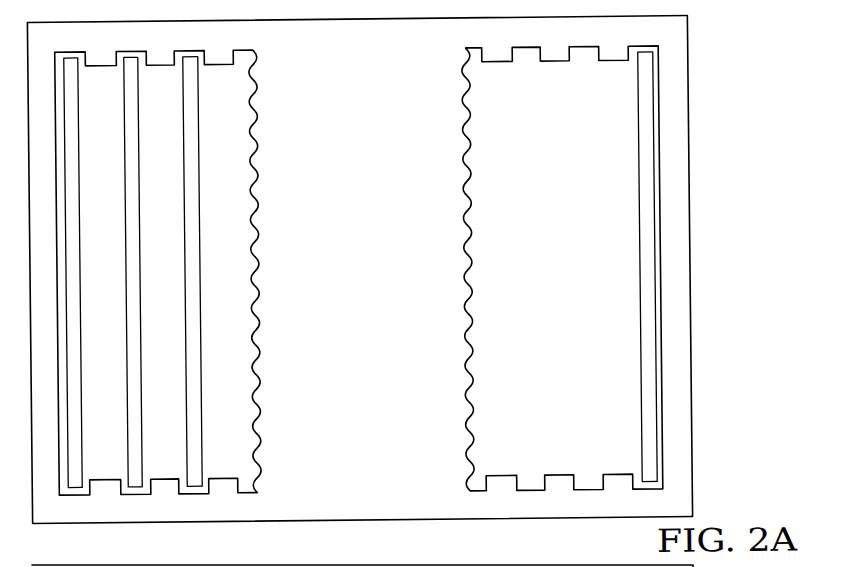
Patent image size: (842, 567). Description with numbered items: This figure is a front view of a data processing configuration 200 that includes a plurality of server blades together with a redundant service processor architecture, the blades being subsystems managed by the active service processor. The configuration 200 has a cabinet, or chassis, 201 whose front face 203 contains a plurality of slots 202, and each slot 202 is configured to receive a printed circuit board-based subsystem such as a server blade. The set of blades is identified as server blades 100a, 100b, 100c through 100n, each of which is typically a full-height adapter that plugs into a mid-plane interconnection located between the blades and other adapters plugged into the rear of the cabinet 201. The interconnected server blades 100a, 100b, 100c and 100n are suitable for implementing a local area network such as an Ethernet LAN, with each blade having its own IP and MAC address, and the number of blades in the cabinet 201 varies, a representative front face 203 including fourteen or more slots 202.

The data processing configuration 200 is at (729, 182).
The cabinet 201 is at (691, 328).
The slot 202 is at (87, 58).
The front face 203 is at (682, 515).
The server blade 100a is at (108, 124).
The server blade 100b is at (134, 139).
The server blade 100c is at (224, 125).
The server blade 100n is at (648, 152).